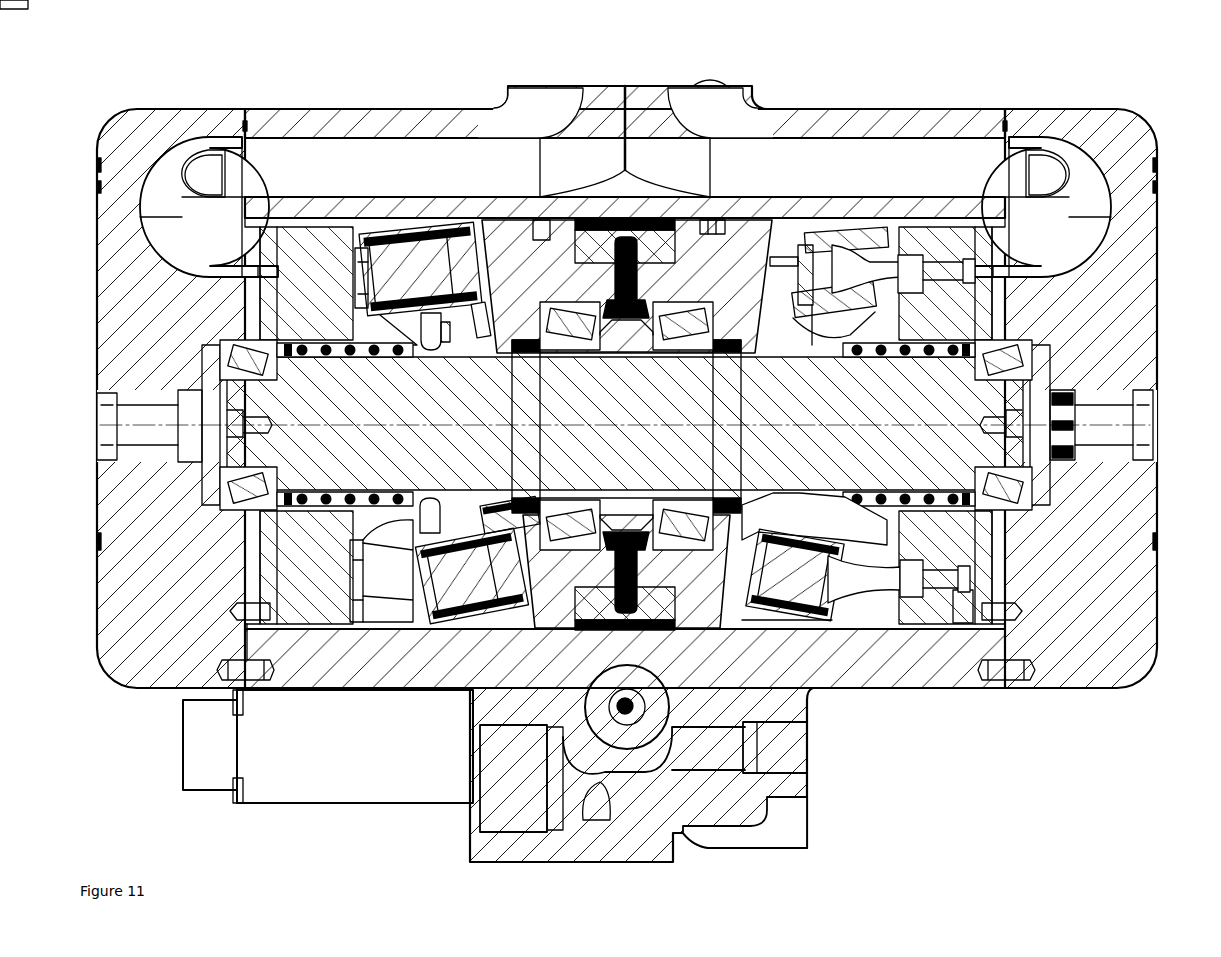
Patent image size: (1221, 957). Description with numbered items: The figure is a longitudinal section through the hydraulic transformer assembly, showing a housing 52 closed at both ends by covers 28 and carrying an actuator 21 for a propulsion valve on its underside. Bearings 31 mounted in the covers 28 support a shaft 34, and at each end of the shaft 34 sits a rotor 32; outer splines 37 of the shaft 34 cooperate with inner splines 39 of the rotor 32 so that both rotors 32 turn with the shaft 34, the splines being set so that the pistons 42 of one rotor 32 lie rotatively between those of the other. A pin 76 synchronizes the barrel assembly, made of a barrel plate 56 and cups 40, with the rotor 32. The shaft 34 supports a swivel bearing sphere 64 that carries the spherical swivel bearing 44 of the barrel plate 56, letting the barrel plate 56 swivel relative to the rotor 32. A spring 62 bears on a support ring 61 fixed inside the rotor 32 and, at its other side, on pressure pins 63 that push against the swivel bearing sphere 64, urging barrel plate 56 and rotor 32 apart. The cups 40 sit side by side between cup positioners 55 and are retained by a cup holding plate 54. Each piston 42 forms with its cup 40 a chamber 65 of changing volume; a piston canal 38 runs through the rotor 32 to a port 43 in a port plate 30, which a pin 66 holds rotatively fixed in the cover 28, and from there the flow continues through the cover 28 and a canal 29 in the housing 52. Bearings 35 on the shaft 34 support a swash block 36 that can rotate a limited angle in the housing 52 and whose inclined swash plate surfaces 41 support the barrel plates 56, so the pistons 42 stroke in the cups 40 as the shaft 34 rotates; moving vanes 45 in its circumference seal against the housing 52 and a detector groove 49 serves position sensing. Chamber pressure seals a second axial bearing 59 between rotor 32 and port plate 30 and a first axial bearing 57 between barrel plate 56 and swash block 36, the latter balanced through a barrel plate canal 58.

The actuator 21 is at (362, 772).
The cover 28 is at (1140, 297).
The canal 29 is at (465, 158).
The port plate 30 is at (265, 240).
The bearing 31 is at (215, 345).
The rotor 32 is at (300, 240).
The shaft 34 is at (645, 448).
The bearing 35 is at (683, 346).
The swash block 36 is at (734, 238).
The outer splines 37 is at (821, 363).
The inner splines 39 is at (626, 499).
The piston canal 38 is at (967, 240).
The cup 40 is at (841, 238).
The inclined swash plate surface 41 is at (489, 268).
The piston 42 is at (846, 548).
The port 43 is at (1005, 262).
The spherical swivel bearing 44 is at (796, 628).
The moving vane 45 is at (664, 232).
The detector groove 49 is at (545, 232).
The housing 52 is at (703, 91).
The cup holding plate 54 is at (322, 270).
The cup positioner 55 is at (412, 258).
The barrel plate 56 is at (467, 255).
The first axial bearing 57 is at (781, 243).
The barrel plate canal 58 is at (793, 257).
The second axial bearing 59 is at (953, 262).
The support ring 61 is at (1083, 666).
The spring 62 is at (871, 545).
The pressure pin 63 is at (861, 560).
The swivel bearing sphere 64 is at (832, 560).
The chamber 65 is at (811, 600).
The pin 66 is at (238, 622).
The pin 76 is at (413, 553).